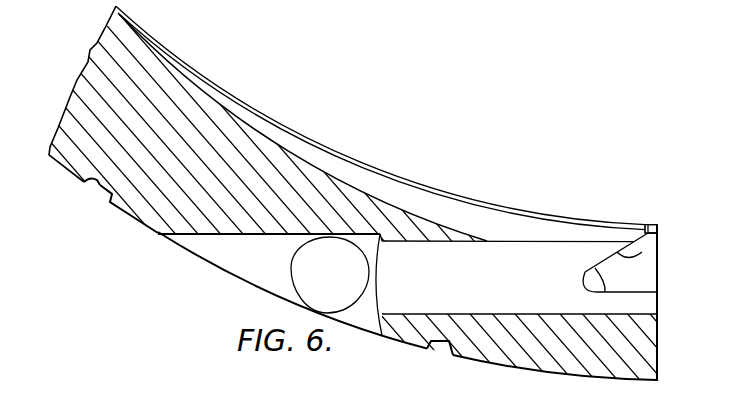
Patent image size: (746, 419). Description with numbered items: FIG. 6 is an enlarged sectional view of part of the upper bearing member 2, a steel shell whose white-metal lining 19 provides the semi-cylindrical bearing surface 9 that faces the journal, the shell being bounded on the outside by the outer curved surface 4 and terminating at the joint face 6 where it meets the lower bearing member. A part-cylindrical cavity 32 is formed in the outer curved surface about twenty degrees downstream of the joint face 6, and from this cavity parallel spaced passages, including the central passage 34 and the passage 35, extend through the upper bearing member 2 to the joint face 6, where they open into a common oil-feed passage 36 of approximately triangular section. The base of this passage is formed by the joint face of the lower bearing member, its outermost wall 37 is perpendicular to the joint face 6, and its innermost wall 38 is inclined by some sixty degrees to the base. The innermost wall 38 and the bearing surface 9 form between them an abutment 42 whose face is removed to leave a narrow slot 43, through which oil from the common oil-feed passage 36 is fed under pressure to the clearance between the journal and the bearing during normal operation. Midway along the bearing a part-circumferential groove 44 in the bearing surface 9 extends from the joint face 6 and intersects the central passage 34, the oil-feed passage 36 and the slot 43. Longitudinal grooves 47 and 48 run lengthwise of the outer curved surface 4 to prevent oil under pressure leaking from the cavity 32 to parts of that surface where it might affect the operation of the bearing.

The upper bearing member 2 is at (293, 157).
The outer curved surface 4 is at (53, 160).
The joint face 6 is at (658, 338).
The bearing surface 9 is at (241, 103).
The lining 19 is at (272, 124).
The part-cylindrical cavity 32 is at (222, 253).
The central passage 34 is at (487, 265).
The passage 35 is at (308, 273).
The common oil-feed passage 36 is at (638, 278).
The outermost wall 37 is at (592, 271).
The innermost wall 38 is at (643, 250).
The abutment 42 is at (641, 222).
The slot 43 is at (652, 222).
The groove 44 is at (387, 186).
The longitudinal groove 47 is at (97, 188).
The longitudinal groove 48 is at (438, 344).